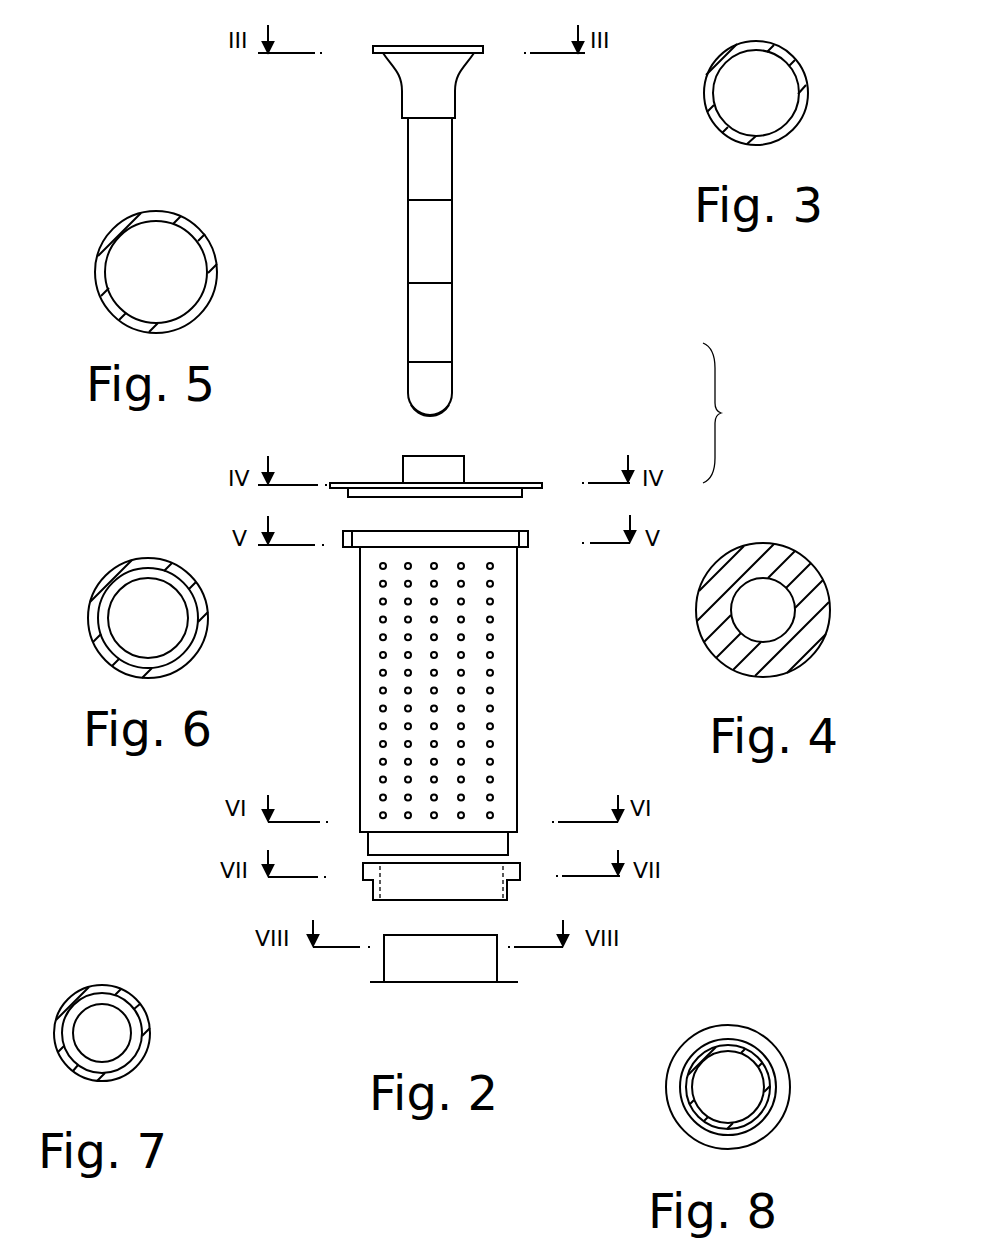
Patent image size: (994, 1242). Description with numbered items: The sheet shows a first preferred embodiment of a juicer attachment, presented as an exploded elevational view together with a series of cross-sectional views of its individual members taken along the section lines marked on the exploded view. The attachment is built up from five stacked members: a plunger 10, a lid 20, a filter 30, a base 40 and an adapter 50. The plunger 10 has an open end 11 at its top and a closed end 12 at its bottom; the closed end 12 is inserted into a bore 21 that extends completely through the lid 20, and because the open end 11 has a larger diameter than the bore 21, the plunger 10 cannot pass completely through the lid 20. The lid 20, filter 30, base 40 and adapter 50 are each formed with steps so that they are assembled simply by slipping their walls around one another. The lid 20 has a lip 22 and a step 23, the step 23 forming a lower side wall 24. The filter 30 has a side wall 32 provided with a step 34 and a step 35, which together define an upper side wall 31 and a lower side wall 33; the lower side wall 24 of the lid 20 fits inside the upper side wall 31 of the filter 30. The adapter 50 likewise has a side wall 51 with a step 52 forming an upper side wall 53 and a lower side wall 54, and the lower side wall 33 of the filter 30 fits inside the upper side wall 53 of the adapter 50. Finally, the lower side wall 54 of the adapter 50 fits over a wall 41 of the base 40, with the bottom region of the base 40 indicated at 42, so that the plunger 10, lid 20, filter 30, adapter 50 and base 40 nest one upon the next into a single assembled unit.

In FIG. 2, the plunger 10 is at (452, 237).
In FIG. 3, the plunger 10 is at (806, 82).
In FIG. 2, the open end 11 is at (455, 50).
In FIG. 3, the open end 11 is at (730, 102).
In FIG. 2, the closed end 12 is at (450, 410).
In FIG. 2, the lid 20 is at (464, 470).
In FIG. 4, the lid 20 is at (813, 658).
In FIG. 2, the bore 21 is at (415, 456).
In FIG. 4, the bore 21 is at (772, 592).
In FIG. 2, the lip 22 is at (352, 488).
In FIG. 2, the step 23 is at (532, 495).
In FIG. 2, the lower side wall 24 is at (352, 492).
In FIG. 2, the filter 30 is at (517, 670).
In FIG. 5, the filter 30 is at (216, 262).
In FIG. 6, the filter 30 is at (207, 628).
In FIG. 2, the upper side wall 31 is at (528, 540).
In FIG. 2, the side wall 32 is at (517, 722).
In FIG. 2, the lower side wall 33 is at (508, 845).
In FIG. 2, the step 34 is at (360, 547).
In FIG. 2, the step 35 is at (361, 830).
In FIG. 6, the step 35 is at (196, 648).
In FIG. 2, the base 40 is at (483, 963).
In FIG. 8, the base 40 is at (788, 1072).
In FIG. 2, the wall 41 is at (384, 968).
In FIG. 8, the wall 41 is at (752, 1050).
In FIG. 2, the bottom of base cap 42 is at (375, 984).
In FIG. 8, the bottom of base cap 42 is at (680, 1114).
In FIG. 2, the adapter 50 is at (507, 888).
In FIG. 7, the adapter 50 is at (133, 1000).
In FIG. 2, the side wall 51 is at (483, 890).
In FIG. 7, the side wall 51 is at (62, 1012).
In FIG. 2, the step 52 is at (372, 881).
In FIG. 7, the step 52 is at (68, 1055).
In FIG. 2, the upper side wall 53 is at (363, 870).
In FIG. 2, the lower side wall 54 is at (378, 900).